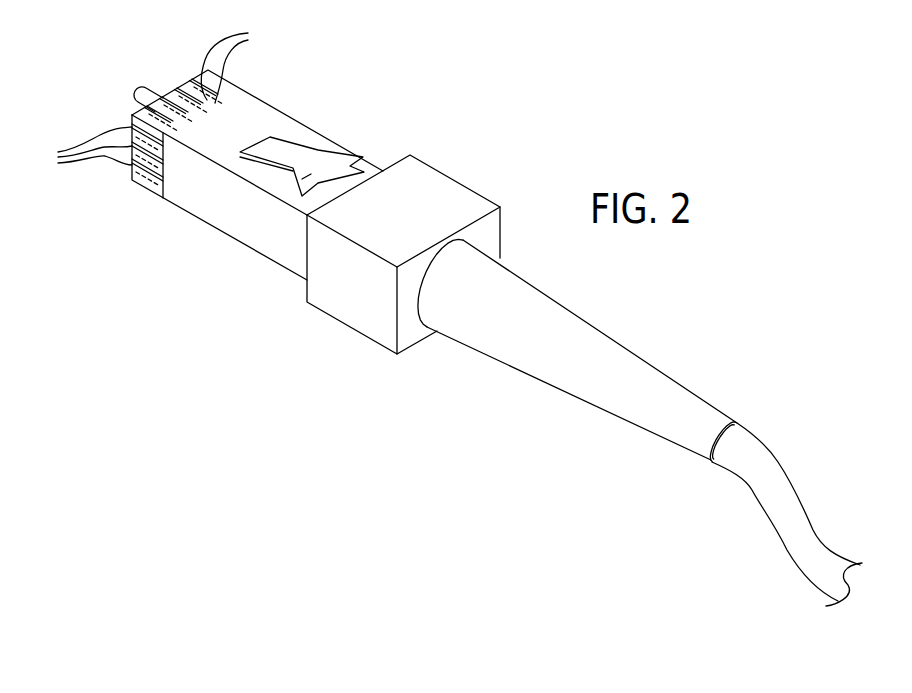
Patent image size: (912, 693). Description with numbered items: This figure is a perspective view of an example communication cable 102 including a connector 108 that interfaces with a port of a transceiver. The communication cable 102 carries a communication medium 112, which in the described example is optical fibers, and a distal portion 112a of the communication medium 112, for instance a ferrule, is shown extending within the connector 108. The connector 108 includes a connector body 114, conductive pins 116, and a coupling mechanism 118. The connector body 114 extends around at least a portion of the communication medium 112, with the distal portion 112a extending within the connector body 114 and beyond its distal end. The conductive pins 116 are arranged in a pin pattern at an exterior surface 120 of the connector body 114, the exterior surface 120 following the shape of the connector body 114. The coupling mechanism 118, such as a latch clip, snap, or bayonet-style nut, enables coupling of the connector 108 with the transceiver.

The communication cable 102 is at (485, 180).
The connector 108 is at (356, 138).
The communication medium 112 is at (775, 467).
The distal portion of the communication medium 112a is at (136, 92).
The connector body 114 is at (230, 237).
The conductive pins 116 is at (150, 94).
The coupling mechanism 118 is at (303, 185).
The exterior surface 120 is at (231, 210).